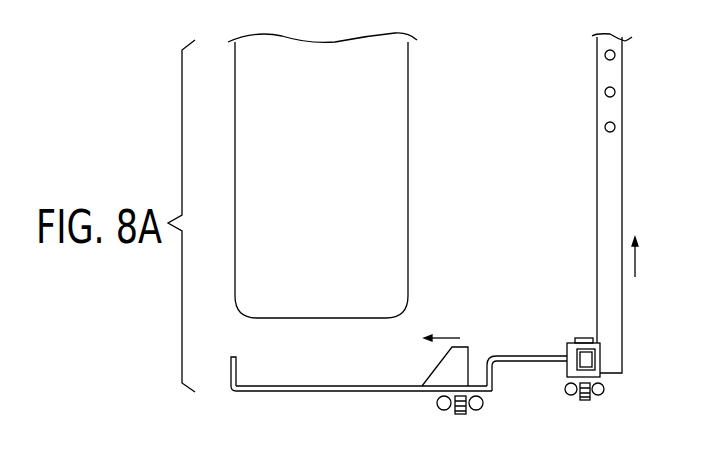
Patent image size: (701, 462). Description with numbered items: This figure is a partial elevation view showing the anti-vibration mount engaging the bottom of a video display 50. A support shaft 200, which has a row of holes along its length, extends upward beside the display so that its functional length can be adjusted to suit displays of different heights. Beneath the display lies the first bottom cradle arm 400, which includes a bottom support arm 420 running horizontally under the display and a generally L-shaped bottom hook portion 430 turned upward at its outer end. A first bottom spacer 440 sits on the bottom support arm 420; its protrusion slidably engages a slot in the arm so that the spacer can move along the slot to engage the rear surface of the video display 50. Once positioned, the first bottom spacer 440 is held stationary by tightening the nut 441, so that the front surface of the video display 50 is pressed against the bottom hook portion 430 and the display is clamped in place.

The video display 50 is at (338, 202).
The support shaft 200 is at (622, 180).
The first bottom cradle arm 400 is at (401, 379).
The bottom support arm 420 is at (363, 392).
The bottom hook portion 430 is at (231, 373).
The first bottom spacer 440 is at (472, 356).
The nut 441 is at (467, 408).